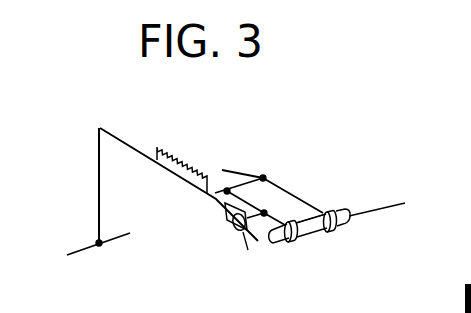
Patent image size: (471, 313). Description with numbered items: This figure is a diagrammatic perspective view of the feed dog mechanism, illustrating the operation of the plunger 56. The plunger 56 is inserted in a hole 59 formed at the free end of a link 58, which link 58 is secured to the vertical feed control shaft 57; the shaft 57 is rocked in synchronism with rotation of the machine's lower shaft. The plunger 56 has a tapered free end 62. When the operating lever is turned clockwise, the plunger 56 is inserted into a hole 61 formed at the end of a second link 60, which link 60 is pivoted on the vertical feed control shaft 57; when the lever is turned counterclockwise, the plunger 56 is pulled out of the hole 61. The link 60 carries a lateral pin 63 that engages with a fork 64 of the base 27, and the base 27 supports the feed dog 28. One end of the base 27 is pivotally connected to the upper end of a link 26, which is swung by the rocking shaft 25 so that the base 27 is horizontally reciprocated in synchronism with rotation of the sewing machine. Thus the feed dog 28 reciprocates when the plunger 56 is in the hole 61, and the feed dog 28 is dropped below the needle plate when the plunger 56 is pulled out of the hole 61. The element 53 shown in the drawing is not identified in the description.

The rocking shaft 25 is at (78, 252).
The link 26 is at (99, 179).
The base 27 is at (130, 144).
The feed dog 28 is at (187, 160).
The shaft 53 is at (390, 205).
The plunger 56 is at (320, 228).
The vertical feed control shaft 57 is at (263, 178).
The link 58 is at (288, 206).
The hole 59 is at (345, 223).
The link 60 is at (224, 195).
The hole 61 is at (315, 240).
The tapered free end 62 is at (273, 241).
The lateral pin 63 is at (232, 232).
The fork 64 is at (248, 250).